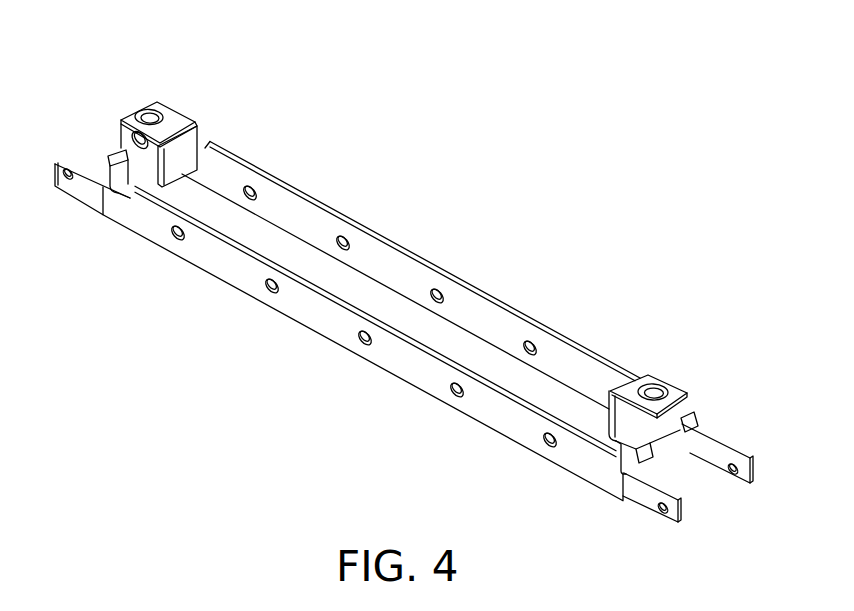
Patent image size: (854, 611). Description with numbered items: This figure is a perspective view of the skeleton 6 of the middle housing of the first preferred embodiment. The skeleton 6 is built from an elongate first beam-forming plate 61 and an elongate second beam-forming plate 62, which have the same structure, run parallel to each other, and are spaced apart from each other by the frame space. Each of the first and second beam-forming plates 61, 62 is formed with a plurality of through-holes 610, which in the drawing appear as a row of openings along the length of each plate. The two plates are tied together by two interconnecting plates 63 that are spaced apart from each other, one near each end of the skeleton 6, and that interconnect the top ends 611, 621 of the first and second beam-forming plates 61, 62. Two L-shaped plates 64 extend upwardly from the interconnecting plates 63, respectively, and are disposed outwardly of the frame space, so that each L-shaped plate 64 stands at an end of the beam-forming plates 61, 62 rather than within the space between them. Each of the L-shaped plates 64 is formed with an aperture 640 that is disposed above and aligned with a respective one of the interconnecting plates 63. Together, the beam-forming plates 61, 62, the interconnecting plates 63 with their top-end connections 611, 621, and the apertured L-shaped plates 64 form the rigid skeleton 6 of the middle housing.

The skeleton 6 is at (404, 278).
The first beam-forming plate 61 is at (404, 296).
The top end of the first beam-forming plate 611 is at (399, 236).
The through-holes 610 is at (342, 236).
The second beam-forming plate 62 is at (363, 343).
The top end of the second beam-forming plate 621 is at (340, 309).
The interconnecting plates 63 is at (147, 167).
The L-shaped plates 64 is at (399, 254).
The aperture 640 is at (149, 108).